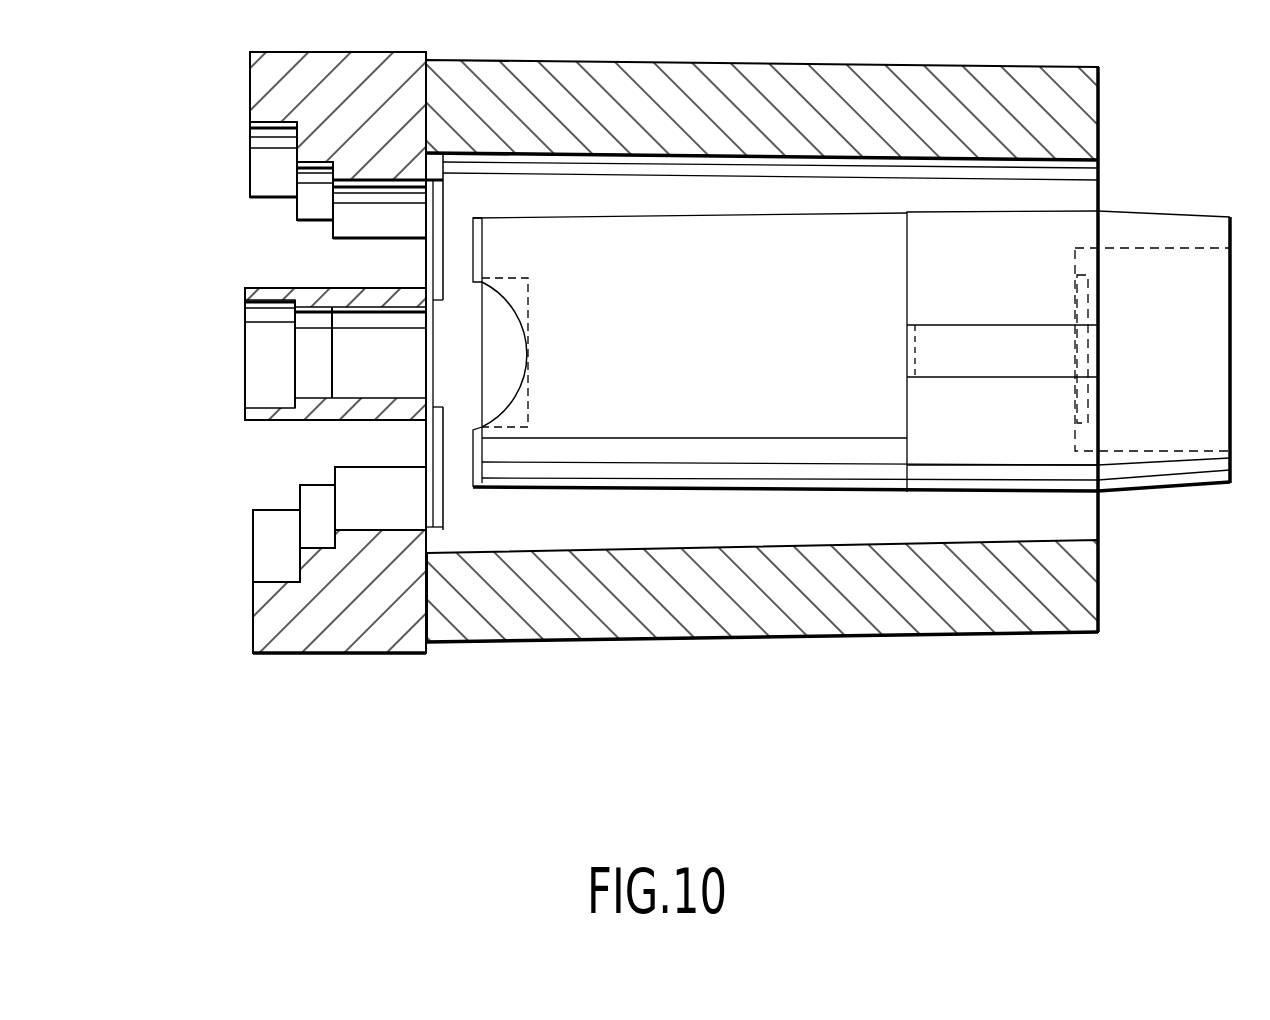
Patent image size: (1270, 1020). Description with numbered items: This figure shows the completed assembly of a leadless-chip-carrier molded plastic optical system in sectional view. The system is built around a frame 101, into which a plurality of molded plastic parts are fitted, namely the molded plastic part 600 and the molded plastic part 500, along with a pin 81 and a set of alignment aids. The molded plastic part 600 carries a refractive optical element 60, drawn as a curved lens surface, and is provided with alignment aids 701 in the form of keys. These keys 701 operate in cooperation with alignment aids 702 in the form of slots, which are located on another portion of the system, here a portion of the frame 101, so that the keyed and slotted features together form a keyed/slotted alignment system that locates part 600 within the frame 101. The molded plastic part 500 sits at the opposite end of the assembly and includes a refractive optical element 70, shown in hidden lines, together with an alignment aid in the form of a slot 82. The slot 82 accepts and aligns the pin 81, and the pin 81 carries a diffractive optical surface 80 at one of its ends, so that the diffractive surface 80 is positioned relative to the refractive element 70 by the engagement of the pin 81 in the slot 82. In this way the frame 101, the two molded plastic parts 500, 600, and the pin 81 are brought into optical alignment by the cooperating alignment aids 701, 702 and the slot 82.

The frame 101 is at (547, 642).
The molded plastic part 500 is at (1025, 198).
The molded plastic part 600 is at (662, 203).
The refractive optical element 60 is at (510, 302).
The refractive optical element 70 is at (1093, 287).
The diffractive optical surface 80 is at (907, 337).
The pin 81 is at (1003, 367).
The slot 82 is at (965, 323).
The alignment aid (key) 701 is at (470, 240).
The alignment aid (slot) 702 is at (455, 183).